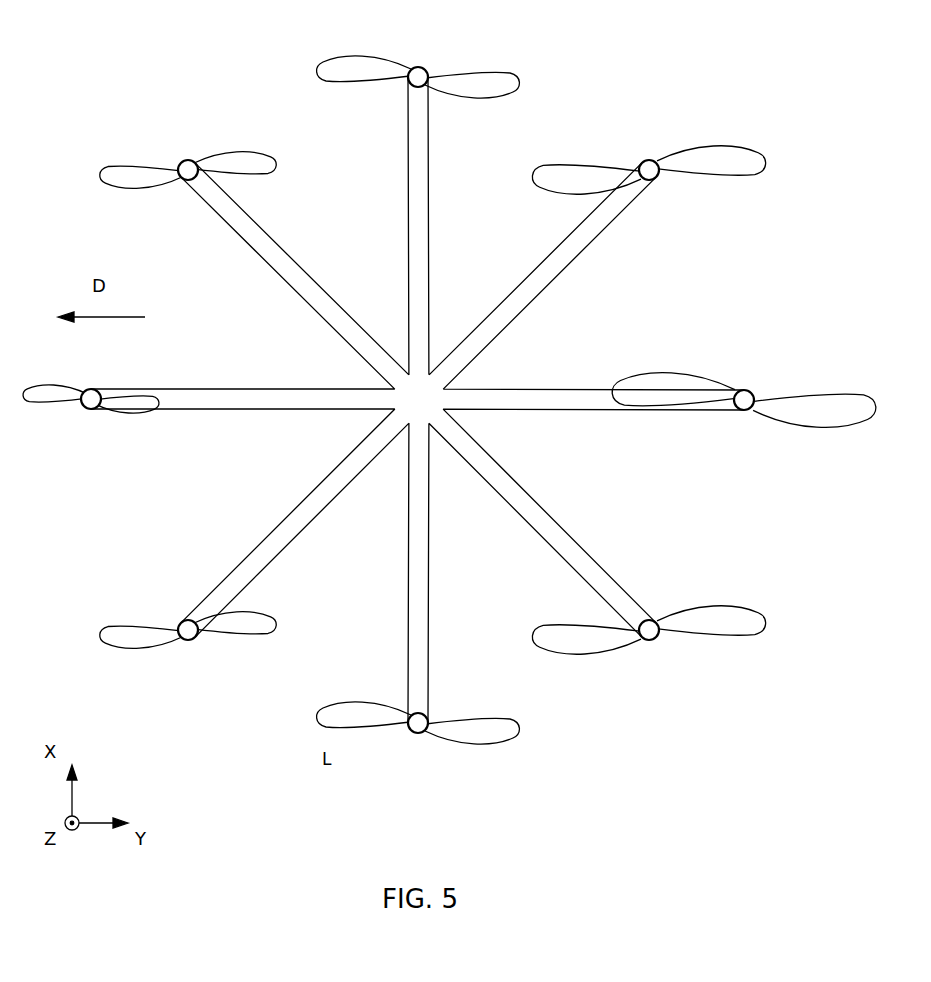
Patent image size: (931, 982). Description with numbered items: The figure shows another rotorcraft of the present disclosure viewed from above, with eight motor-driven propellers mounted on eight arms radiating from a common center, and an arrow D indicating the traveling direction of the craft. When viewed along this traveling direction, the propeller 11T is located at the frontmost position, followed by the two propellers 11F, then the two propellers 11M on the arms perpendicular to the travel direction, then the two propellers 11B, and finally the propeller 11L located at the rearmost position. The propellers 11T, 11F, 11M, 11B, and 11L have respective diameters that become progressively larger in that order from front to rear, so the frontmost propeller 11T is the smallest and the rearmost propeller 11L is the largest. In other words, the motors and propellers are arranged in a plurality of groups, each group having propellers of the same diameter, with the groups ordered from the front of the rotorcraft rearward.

The propeller 11M is at (419, 72).
The propeller 11F is at (189, 166).
The propeller 11B is at (650, 166).
The propeller 11T is at (90, 396).
The propeller 11L is at (745, 397).